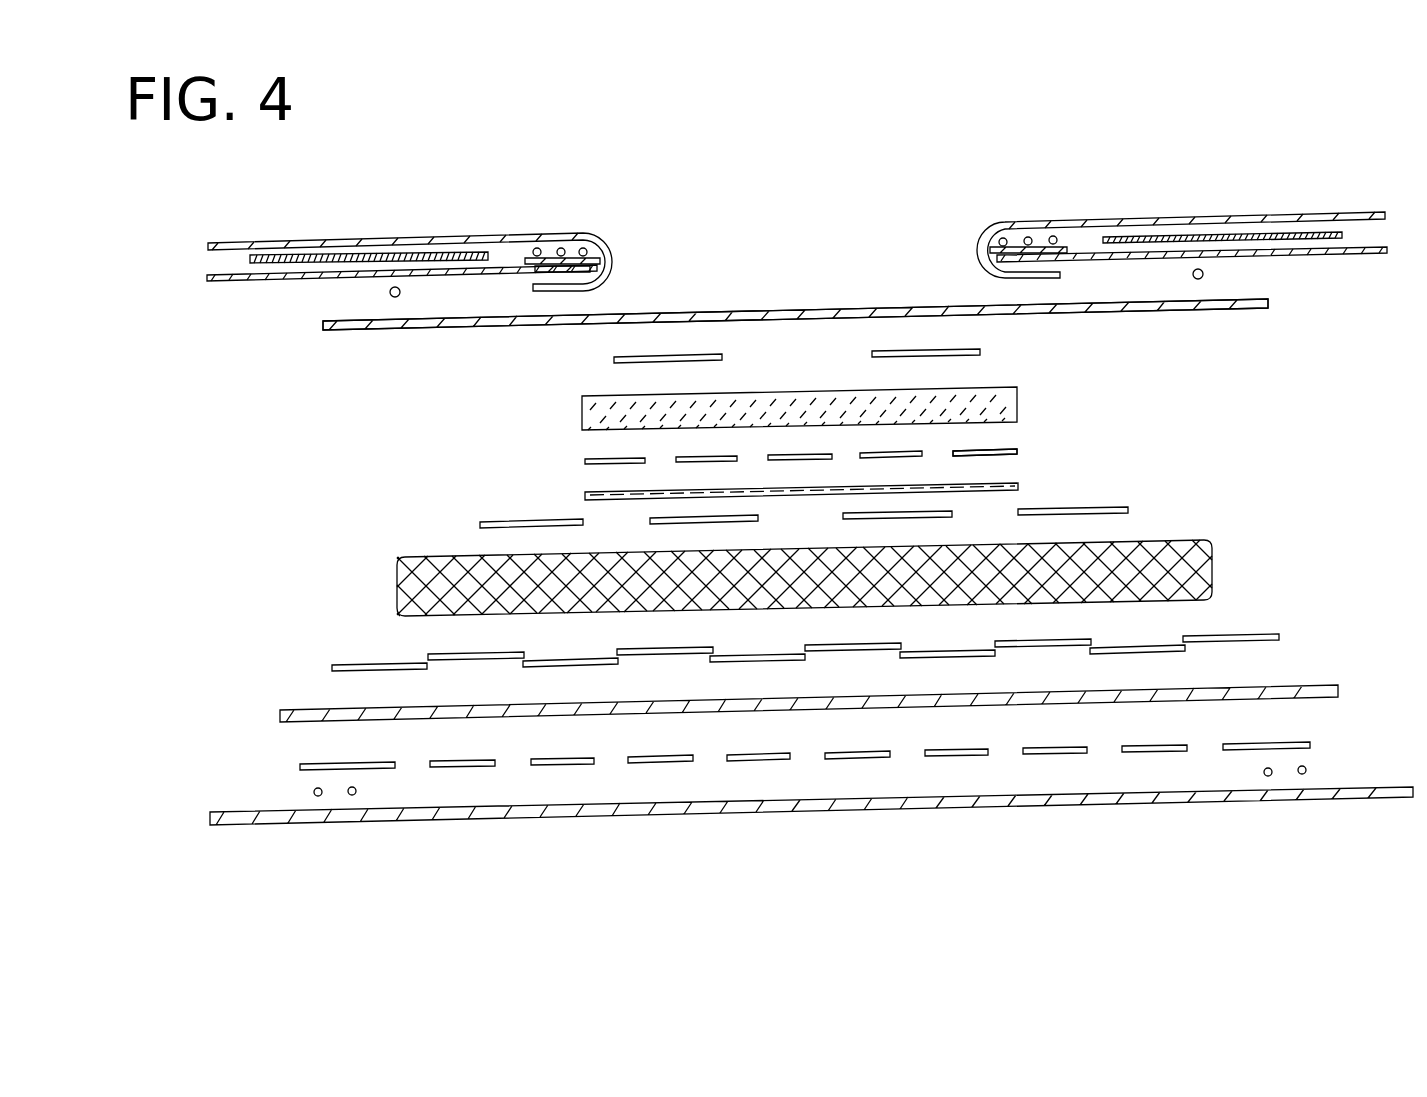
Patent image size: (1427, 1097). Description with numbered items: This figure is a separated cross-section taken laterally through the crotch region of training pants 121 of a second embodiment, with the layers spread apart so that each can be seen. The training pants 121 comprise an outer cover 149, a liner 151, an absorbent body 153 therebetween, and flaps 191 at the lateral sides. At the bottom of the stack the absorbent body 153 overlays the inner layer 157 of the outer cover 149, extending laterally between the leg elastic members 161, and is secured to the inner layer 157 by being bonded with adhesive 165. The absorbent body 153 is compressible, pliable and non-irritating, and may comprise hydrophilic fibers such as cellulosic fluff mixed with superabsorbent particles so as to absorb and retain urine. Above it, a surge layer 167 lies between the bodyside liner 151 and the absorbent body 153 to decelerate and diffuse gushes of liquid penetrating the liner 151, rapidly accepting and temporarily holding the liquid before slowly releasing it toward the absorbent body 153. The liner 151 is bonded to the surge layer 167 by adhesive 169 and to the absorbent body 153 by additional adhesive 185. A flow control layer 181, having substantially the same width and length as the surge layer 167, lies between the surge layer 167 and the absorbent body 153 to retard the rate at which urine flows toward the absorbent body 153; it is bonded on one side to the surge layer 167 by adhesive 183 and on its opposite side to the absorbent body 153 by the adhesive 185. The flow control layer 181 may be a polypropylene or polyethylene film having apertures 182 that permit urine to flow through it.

The training pants 121 is at (800, 188).
The flaps 191 is at (345, 226).
The liner 151 is at (748, 310).
The adhesive 169 is at (968, 350).
The surge layer 167 is at (1017, 397).
The apertures 182 is at (617, 491).
The adhesive 183 is at (1010, 452).
The flow control layer 181 is at (613, 493).
The adhesive 185 is at (483, 526).
The absorbent body 153 is at (1212, 540).
The adhesive 165 is at (1250, 637).
The inner layer 157 is at (1305, 685).
The outer cover 149 is at (739, 841).
The leg elastic members 161 is at (352, 796).